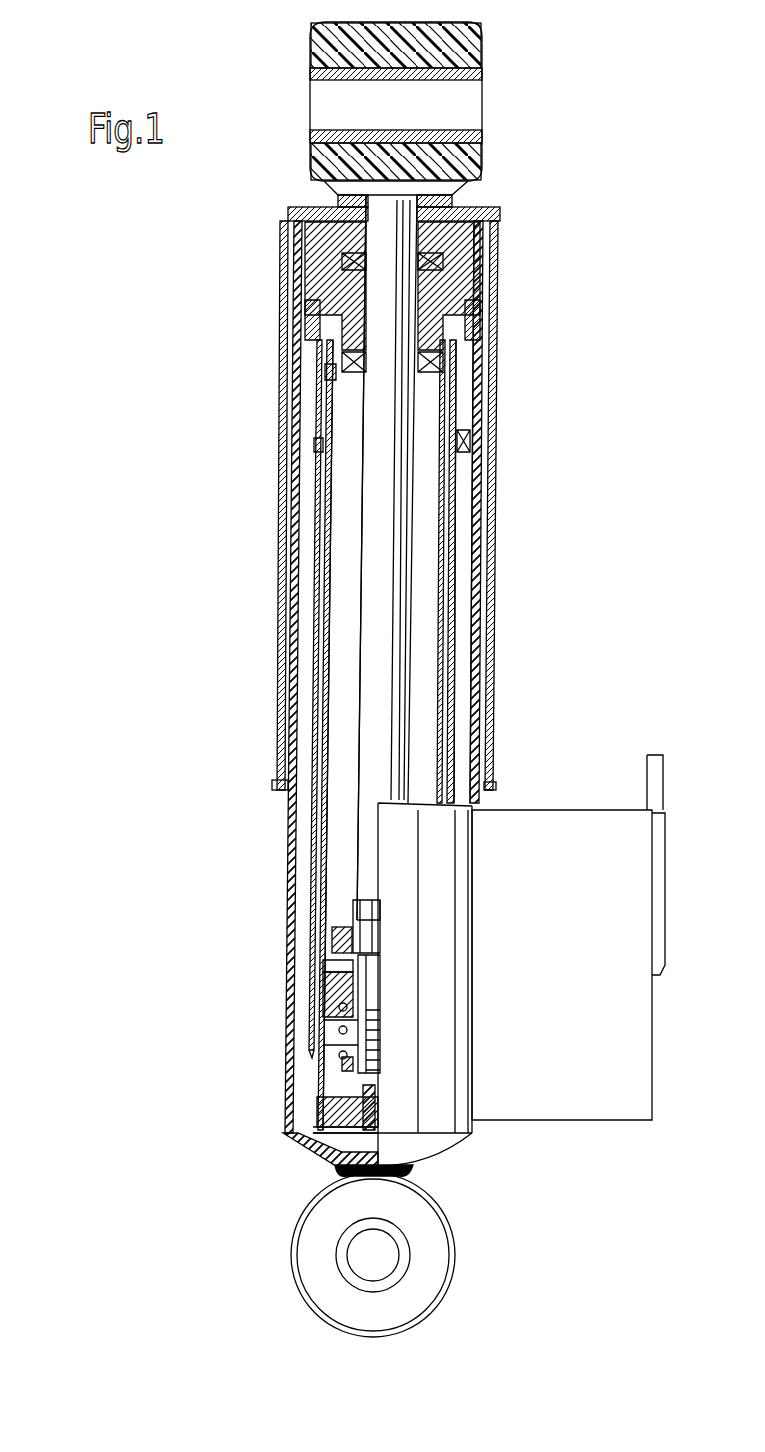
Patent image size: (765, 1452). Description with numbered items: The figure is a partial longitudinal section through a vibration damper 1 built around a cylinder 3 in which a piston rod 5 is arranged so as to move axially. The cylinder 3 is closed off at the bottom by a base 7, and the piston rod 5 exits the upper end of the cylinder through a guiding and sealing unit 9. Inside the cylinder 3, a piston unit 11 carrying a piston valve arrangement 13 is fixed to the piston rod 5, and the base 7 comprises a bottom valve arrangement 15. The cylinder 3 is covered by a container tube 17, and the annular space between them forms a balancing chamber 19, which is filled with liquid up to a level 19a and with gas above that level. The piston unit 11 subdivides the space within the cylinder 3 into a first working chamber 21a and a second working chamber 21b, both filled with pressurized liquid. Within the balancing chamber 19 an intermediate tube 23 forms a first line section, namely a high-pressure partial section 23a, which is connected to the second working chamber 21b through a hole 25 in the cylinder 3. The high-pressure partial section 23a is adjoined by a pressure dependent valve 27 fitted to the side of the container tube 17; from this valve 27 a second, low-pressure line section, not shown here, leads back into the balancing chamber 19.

The vibration damper 1 is at (131, 873).
The cylinder 3 is at (443, 622).
The piston rod 5 is at (403, 497).
The base 7 is at (288, 1140).
The guiding and sealing unit 9 is at (468, 318).
The piston unit 11 is at (334, 919).
The piston valve arrangement 13 is at (315, 1028).
The bottom valve arrangement 15 is at (332, 1078).
The container tube 17 is at (492, 381).
The balancing chamber 19 is at (465, 572).
The level 19a is at (320, 442).
The first working chamber 21a is at (340, 1065).
The second working chamber 21b is at (347, 618).
The intermediate tube 23 is at (452, 713).
The high-pressure partial section 23a is at (465, 410).
The hole 25 is at (335, 379).
The valve 27 is at (570, 810).